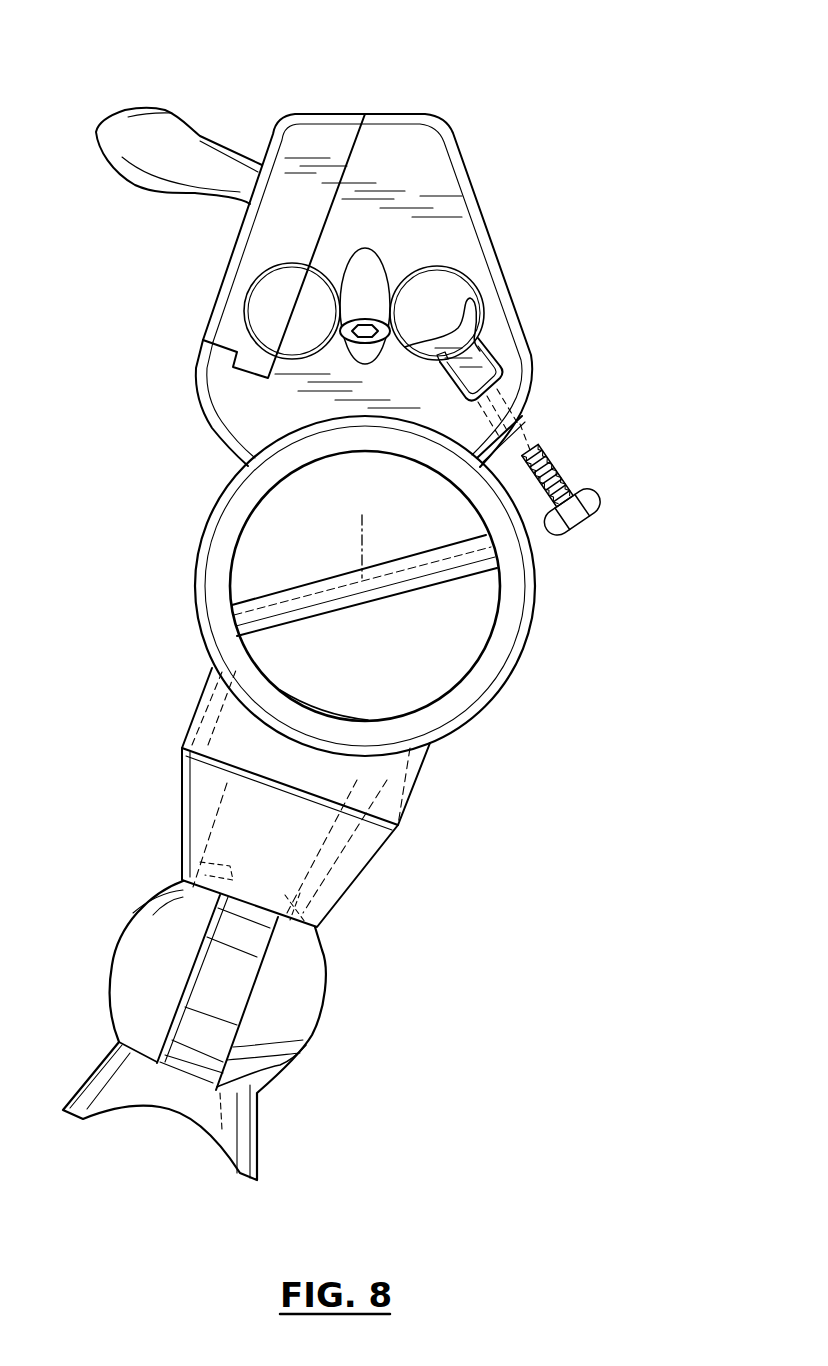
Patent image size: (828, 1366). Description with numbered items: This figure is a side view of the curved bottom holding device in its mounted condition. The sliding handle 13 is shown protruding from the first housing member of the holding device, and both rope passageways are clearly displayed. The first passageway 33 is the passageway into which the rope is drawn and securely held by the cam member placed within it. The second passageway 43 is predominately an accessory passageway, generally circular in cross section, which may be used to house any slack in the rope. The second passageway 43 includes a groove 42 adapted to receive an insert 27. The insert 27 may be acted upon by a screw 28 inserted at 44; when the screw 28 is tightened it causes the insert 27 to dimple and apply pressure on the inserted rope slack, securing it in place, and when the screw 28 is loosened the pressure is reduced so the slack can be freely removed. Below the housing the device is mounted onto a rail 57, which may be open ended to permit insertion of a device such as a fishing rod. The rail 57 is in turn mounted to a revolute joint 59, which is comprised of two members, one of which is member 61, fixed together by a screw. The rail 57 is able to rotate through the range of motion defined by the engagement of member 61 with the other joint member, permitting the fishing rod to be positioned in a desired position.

The sliding handle 13 is at (157, 110).
The first passageway 33 is at (266, 300).
The second passageway 43 is at (440, 287).
The insert 27 is at (473, 373).
The groove 42 is at (520, 419).
The screw insertion point 44 is at (522, 428).
The screw 28 is at (606, 506).
The rail 57 is at (540, 588).
The revolute joint 59 is at (382, 877).
The revolute joint member 61 is at (317, 1060).